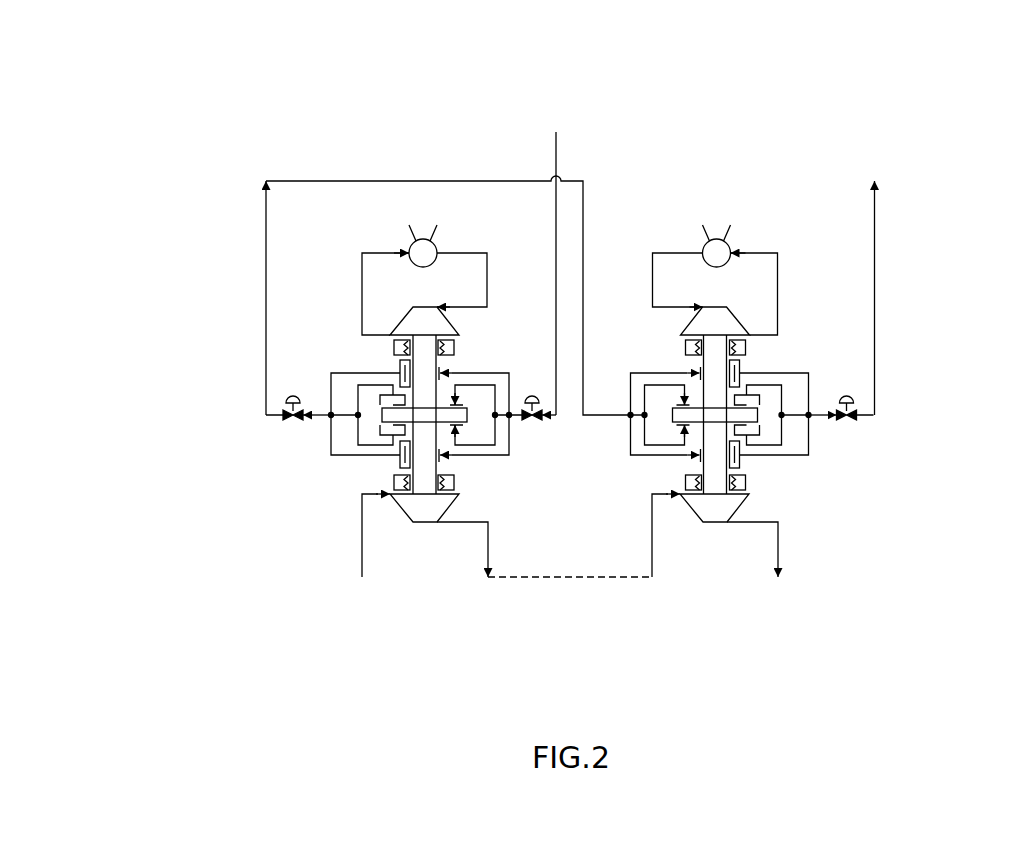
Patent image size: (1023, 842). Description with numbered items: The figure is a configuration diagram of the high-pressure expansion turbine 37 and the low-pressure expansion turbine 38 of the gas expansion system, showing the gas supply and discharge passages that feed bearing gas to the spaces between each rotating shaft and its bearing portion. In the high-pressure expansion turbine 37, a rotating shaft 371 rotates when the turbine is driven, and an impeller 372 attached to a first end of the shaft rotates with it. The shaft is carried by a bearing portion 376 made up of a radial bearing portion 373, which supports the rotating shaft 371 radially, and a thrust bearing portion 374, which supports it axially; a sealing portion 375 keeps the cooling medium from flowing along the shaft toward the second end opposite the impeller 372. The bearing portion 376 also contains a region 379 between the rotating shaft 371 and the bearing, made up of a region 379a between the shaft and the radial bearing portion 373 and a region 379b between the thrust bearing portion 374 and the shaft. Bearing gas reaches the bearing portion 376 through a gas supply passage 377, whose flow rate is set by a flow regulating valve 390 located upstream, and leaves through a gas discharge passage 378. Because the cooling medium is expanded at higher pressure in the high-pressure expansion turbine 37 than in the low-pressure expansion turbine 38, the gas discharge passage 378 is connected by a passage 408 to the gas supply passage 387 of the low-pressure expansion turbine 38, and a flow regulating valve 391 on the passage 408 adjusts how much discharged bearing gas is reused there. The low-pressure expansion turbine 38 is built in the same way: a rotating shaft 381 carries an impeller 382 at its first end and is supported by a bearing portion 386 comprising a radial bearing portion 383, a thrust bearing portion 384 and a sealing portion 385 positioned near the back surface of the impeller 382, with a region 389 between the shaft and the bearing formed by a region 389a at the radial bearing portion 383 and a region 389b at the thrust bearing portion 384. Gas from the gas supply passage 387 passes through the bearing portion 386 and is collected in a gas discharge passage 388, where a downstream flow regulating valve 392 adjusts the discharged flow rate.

The high-pressure expansion turbine 37 is at (498, 137).
The low-pressure expansion turbine 38 is at (820, 137).
The rotating shaft 371 is at (425, 483).
The impeller 372 is at (400, 508).
The radial bearing portion 373 is at (400, 381).
The thrust bearing portion 374 is at (390, 432).
The sealing portion 375 is at (392, 482).
The bearing portion 376 is at (182, 445).
The gas supply passage 377 is at (513, 318).
The gas discharge passage 378 is at (316, 318).
The region 379 is at (458, 103).
The region 379a is at (438, 372).
The region 379b is at (457, 400).
The rotating shaft 381 is at (715, 483).
The impeller 382 is at (737, 508).
The radial bearing portion 383 is at (736, 381).
The thrust bearing portion 384 is at (750, 432).
The sealing portion 385 is at (746, 483).
The bearing portion 386 is at (958, 447).
The gas supply passage 387 is at (621, 318).
The gas discharge passage 388 is at (824, 318).
The region 389 is at (628, 632).
The region 389a is at (683, 428).
The region 389b is at (697, 459).
The flow regulating valve 390 is at (532, 396).
The flow regulating valve 391 is at (293, 396).
The flow regulating valve 392 is at (847, 396).
The passage 408 is at (266, 210).